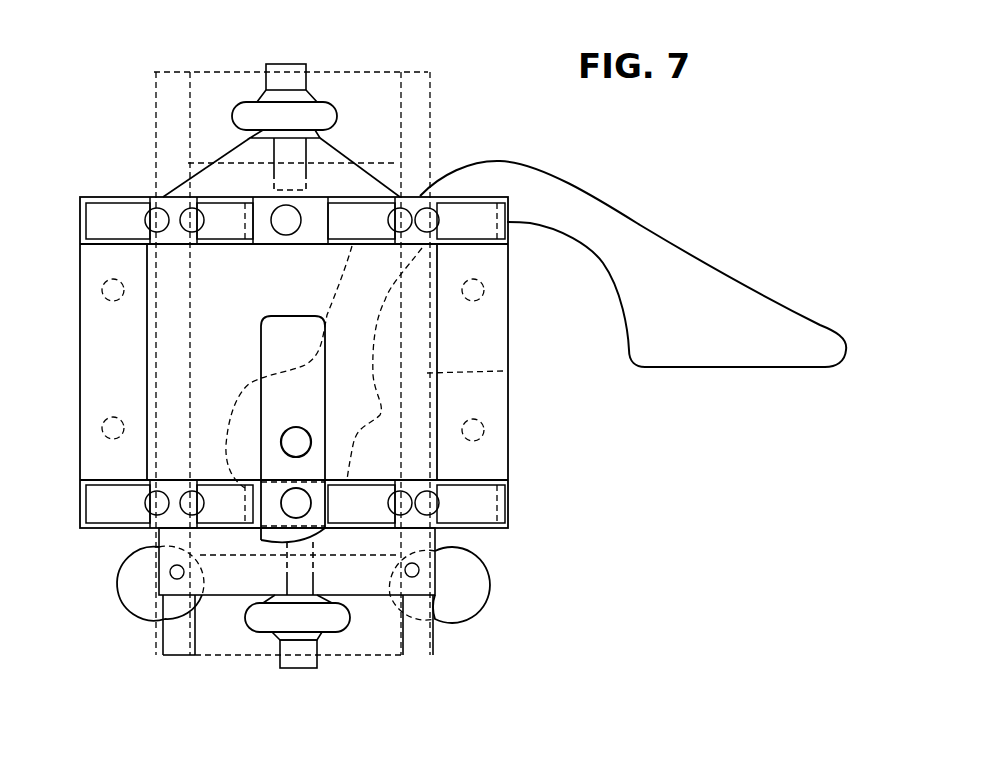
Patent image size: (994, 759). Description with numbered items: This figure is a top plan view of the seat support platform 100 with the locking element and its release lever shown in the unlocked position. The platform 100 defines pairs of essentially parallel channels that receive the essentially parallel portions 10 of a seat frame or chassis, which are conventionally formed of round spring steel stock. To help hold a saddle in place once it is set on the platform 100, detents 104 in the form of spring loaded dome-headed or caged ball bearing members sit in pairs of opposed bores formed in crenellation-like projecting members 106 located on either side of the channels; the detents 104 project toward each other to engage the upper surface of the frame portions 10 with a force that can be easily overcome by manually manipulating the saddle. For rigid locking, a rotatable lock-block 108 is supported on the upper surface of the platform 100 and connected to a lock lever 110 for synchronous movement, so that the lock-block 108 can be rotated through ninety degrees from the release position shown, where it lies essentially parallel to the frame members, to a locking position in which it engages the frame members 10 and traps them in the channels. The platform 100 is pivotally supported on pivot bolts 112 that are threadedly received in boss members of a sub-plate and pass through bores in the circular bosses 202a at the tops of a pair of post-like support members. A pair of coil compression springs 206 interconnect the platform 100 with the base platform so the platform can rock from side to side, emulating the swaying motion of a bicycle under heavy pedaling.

The seat frame portions 10 is at (165, 366).
The seat support platform 100 is at (78, 458).
The detents 104 is at (184, 211).
The crenellation-like projecting members 106 is at (100, 228).
The lock-block 108 is at (273, 345).
The lock lever 110 is at (748, 357).
The pivot bolts 112 is at (283, 62).
The circular bosses 202a is at (238, 113).
The coil compression springs 206 is at (140, 614).